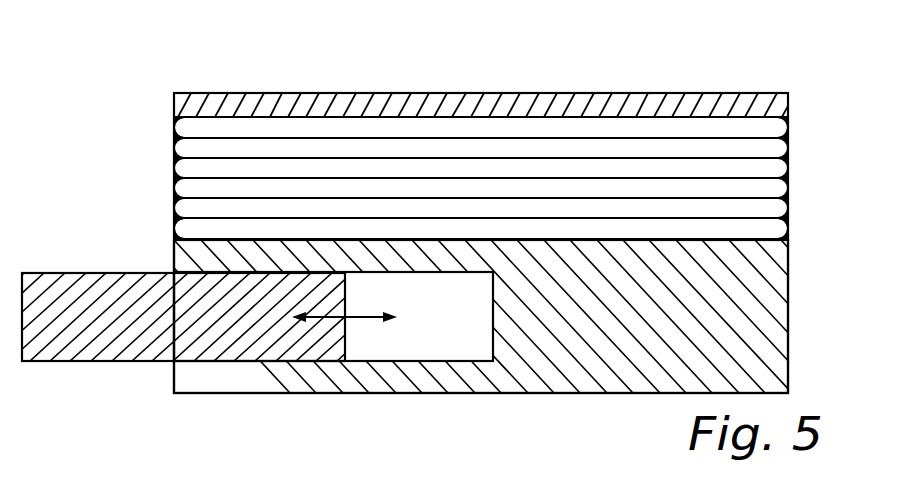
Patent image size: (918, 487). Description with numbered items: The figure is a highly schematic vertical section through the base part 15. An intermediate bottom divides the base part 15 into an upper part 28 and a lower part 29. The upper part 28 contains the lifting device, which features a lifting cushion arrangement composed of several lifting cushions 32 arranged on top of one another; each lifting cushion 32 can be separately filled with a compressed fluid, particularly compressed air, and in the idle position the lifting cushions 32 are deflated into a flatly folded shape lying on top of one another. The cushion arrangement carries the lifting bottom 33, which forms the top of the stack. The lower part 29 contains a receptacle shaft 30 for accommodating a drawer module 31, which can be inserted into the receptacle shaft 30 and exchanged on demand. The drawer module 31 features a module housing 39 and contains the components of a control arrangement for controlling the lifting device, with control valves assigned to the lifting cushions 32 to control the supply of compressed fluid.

The base part 15 is at (810, 181).
The upper part 28 is at (162, 160).
The lower part 29 is at (573, 368).
The receptacle shaft 30 is at (440, 343).
The drawer module 31 is at (69, 286).
The lifting cushions 32 is at (775, 127).
The lifting bottom 33 is at (482, 108).
The module housing 39 is at (80, 343).